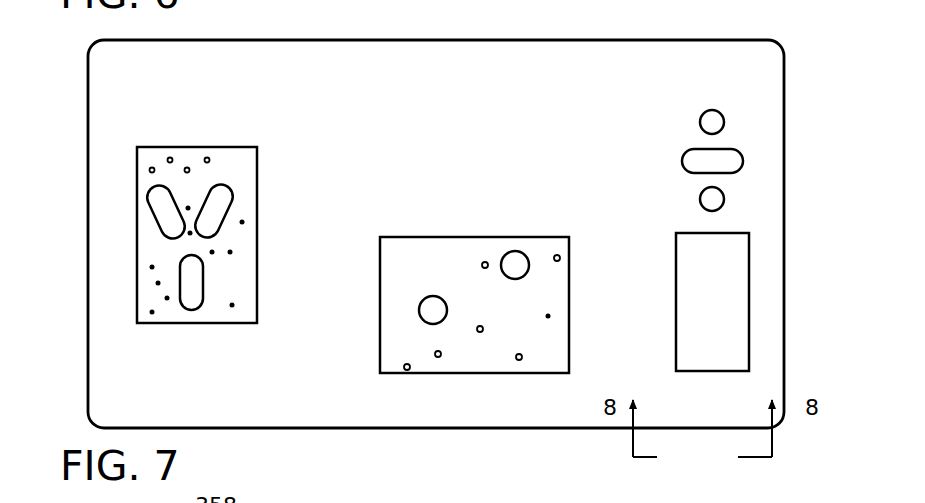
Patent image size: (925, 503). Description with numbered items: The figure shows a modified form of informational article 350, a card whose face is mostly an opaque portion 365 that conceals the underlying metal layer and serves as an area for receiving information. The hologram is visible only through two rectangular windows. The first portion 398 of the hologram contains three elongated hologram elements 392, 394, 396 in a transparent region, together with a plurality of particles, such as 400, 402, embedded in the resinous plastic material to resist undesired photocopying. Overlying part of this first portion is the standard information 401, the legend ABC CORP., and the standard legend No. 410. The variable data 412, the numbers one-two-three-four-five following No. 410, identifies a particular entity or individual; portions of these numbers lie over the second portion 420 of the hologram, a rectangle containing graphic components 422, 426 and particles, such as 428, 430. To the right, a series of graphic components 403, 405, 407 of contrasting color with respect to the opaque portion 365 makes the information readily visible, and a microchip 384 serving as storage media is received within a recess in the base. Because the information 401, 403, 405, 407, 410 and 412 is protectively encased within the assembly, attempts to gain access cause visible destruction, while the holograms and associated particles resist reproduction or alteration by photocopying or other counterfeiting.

The informational article 350 is at (552, 36).
The opaque portion 365 is at (541, 89).
The first portion of the hologram 398 is at (135, 219).
The elongated hologram element 392 is at (182, 193).
The elongated hologram element 394 is at (222, 190).
The elongated hologram element 396 is at (186, 288).
The particle 400 is at (168, 158).
The particle 402 is at (150, 169).
The information 401 is at (577, 157).
The standard information No. 410 is at (283, 314).
The second portion of the hologram 420 is at (576, 280).
The graphic component 422 is at (514, 251).
The graphic component 426 is at (428, 326).
The variable data 412 is at (562, 309).
The particle 428 is at (407, 371).
The particle 430 is at (519, 361).
The graphic component 403 is at (724, 115).
The graphic component 405 is at (740, 152).
The graphic component 407 is at (726, 197).
The microchip 384 is at (725, 275).